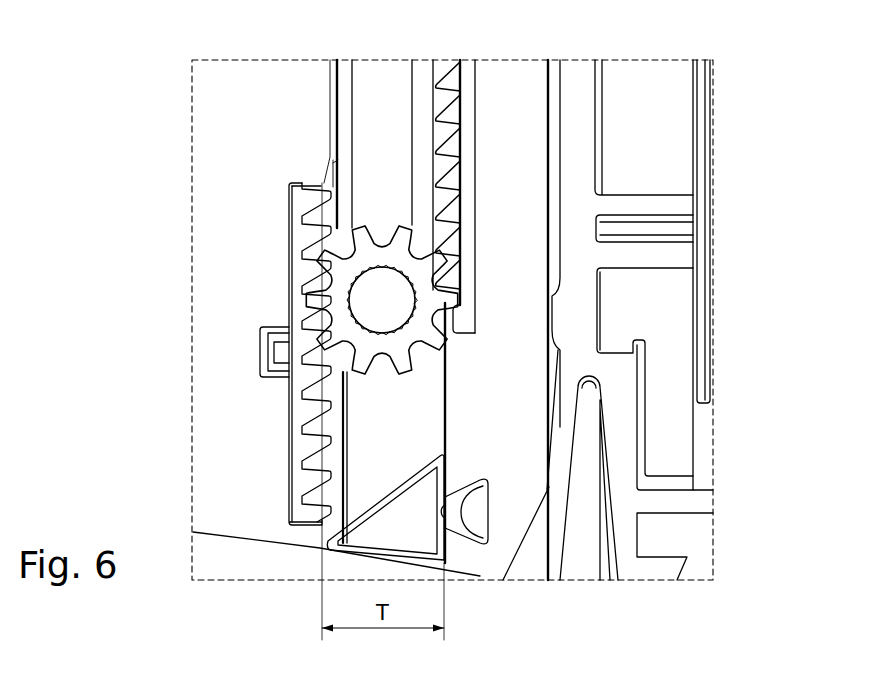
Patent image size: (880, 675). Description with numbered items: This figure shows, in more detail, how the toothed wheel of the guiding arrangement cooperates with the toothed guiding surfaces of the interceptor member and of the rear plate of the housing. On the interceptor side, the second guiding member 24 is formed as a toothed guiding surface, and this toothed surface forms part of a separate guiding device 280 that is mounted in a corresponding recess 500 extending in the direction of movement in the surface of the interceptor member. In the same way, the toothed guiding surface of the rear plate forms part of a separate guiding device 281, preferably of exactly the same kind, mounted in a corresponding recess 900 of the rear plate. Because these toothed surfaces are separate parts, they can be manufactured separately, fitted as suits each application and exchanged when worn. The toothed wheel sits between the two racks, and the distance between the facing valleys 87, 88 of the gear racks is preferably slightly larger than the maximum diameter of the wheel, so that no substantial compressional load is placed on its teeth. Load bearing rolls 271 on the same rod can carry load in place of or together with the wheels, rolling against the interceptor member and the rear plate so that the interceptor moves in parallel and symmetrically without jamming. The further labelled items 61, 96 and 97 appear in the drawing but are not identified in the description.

The second guiding member 24 is at (404, 290).
The guide member 61 is at (264, 93).
The valley 87 is at (309, 212).
The pinion gear 97 is at (366, 226).
The recess 500 is at (468, 142).
The valley 88 is at (600, 217).
The guiding device 280 is at (460, 318).
The guiding device 281 is at (298, 231).
The recess 900 is at (296, 422).
The frame wall 96 is at (228, 449).
The rolling members 271 is at (380, 378).